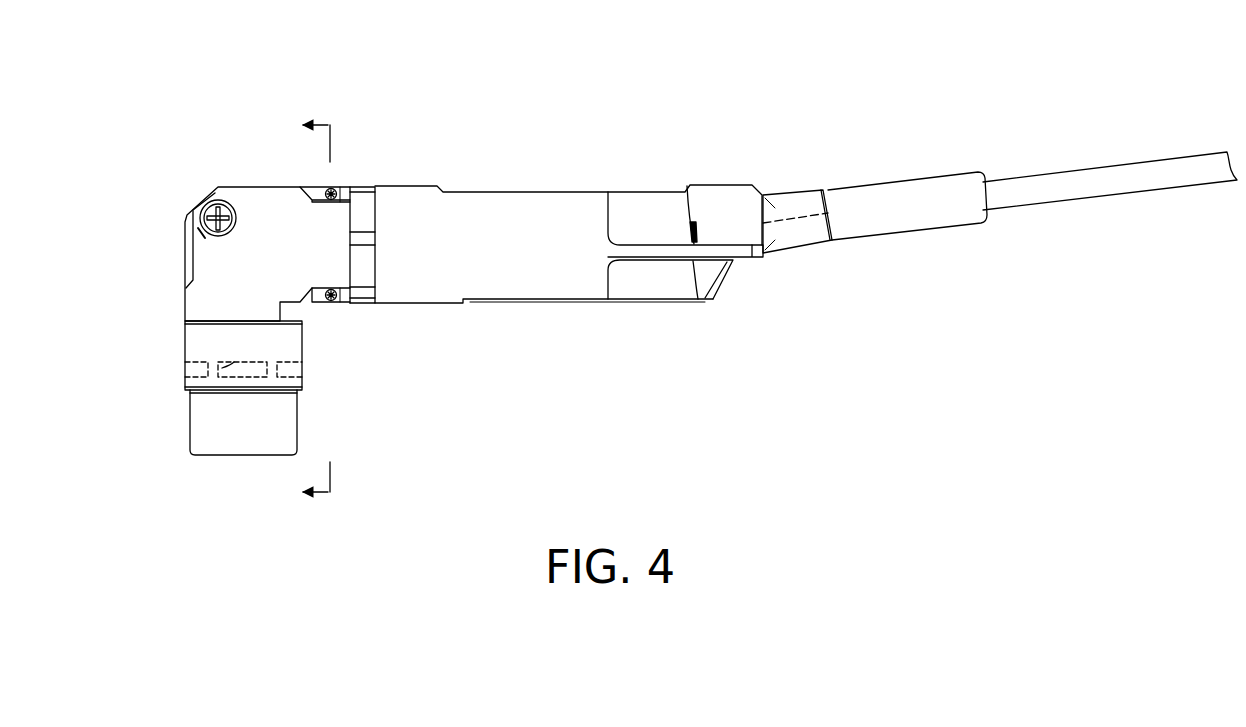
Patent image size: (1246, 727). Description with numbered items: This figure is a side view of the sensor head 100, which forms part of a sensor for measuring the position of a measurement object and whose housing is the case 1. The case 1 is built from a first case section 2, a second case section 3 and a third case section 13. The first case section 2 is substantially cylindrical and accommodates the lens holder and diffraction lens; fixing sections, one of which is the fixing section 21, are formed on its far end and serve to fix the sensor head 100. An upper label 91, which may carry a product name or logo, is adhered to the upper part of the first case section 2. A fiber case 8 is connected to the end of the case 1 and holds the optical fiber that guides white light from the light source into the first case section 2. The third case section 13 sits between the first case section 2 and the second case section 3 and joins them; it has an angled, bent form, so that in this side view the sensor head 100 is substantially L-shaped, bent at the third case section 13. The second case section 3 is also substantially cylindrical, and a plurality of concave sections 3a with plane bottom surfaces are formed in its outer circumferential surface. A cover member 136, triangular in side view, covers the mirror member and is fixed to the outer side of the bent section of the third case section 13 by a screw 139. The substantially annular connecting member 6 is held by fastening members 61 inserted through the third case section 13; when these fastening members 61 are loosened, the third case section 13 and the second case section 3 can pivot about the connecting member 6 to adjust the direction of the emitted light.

The sensor head 100 is at (617, 97).
The case 1 is at (422, 347).
The first case section 2 is at (412, 301).
The second case section 3 is at (297, 423).
The concave sections 3a is at (215, 368).
The connecting member 6 is at (366, 211).
The fiber case 8 is at (868, 186).
The third case section 13 is at (288, 267).
The fixing section 21 is at (668, 262).
The fastening members 61 is at (335, 186).
The upper label 91 is at (483, 190).
The cover member 136 is at (185, 262).
The screw 139 is at (215, 206).